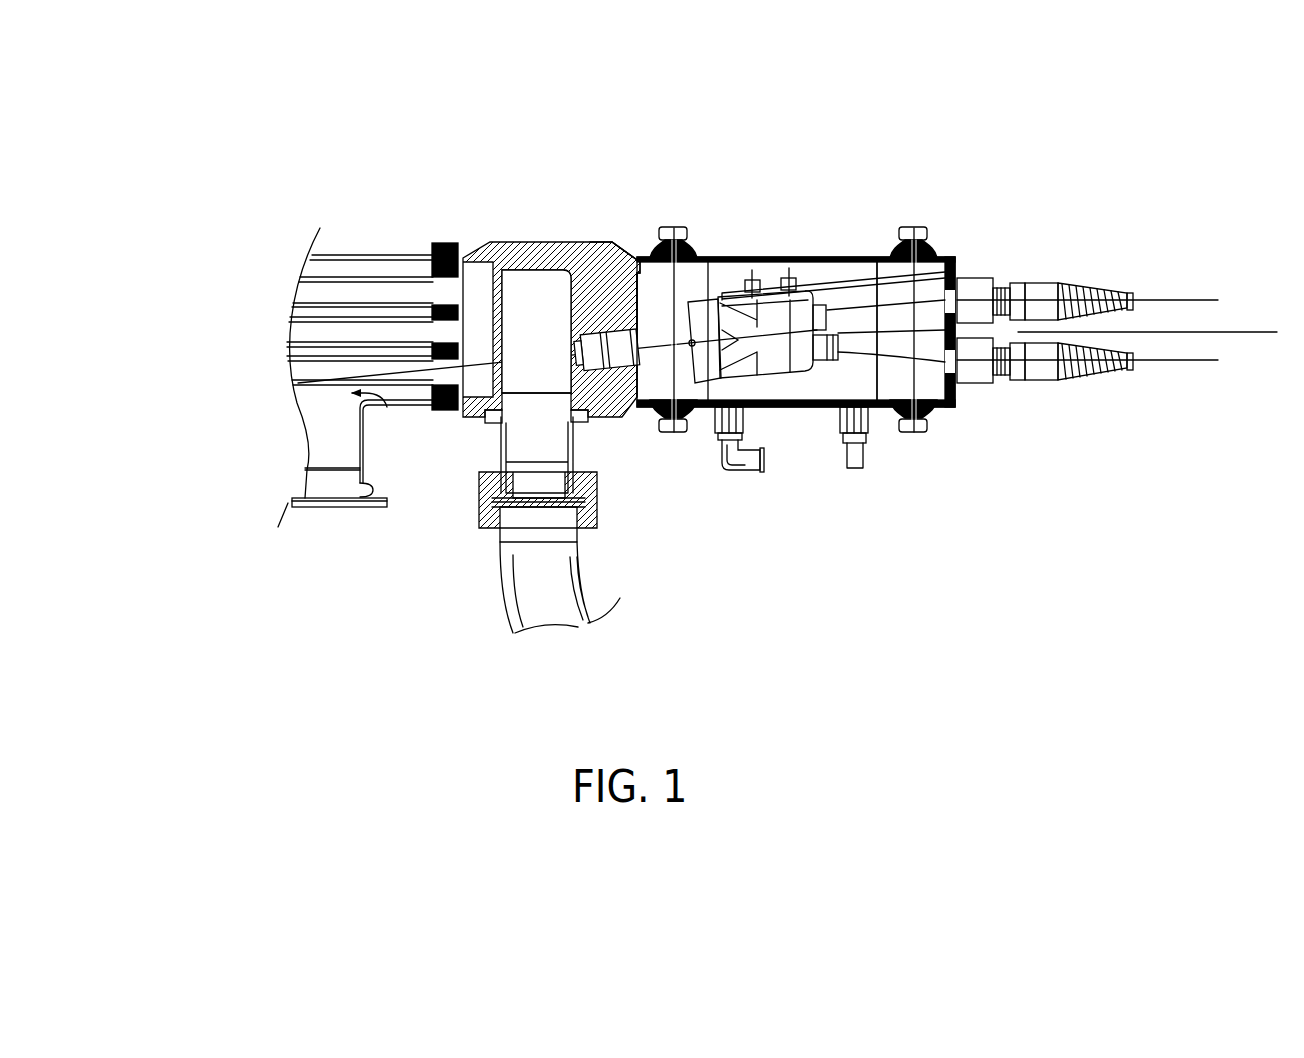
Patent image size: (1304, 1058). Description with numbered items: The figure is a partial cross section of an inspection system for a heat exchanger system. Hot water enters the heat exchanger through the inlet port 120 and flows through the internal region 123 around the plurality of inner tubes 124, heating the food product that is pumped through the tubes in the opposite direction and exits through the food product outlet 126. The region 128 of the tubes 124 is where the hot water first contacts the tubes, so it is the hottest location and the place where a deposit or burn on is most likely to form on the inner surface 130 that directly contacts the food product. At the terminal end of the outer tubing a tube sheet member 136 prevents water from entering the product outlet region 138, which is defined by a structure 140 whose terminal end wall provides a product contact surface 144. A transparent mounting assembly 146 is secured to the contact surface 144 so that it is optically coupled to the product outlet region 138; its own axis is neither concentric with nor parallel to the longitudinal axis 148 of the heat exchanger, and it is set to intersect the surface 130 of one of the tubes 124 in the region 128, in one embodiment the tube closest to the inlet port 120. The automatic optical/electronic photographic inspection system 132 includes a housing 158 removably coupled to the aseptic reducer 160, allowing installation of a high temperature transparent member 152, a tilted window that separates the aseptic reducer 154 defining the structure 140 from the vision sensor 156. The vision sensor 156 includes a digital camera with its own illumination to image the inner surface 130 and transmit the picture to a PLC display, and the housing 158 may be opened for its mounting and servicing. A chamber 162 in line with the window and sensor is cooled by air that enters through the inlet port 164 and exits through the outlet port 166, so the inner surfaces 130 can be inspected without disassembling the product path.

The inlet port 120 is at (315, 477).
The internal region 123 is at (363, 350).
The inner tubes 124 is at (305, 365).
The food product outlet 126 is at (542, 585).
The region of tubes 128 is at (375, 405).
The inner surface 130 is at (408, 379).
The inspection system 132 is at (823, 217).
The tube sheet member 136 is at (515, 280).
The product outlet region 138 is at (524, 265).
The structure 140 is at (541, 258).
The product contact surface 144 is at (567, 313).
The transparent mounting assembly 146 is at (607, 420).
The longitudinal axis 148 is at (1173, 332).
The transparent member 152 is at (700, 278).
The aseptic reducer 154 is at (628, 243).
The vision sensor 156 is at (764, 368).
The housing 158 is at (763, 258).
The aseptic reducer 160 is at (637, 242).
The chamber 162 is at (877, 403).
The inlet port 164 is at (759, 470).
The outlet port 166 is at (866, 460).